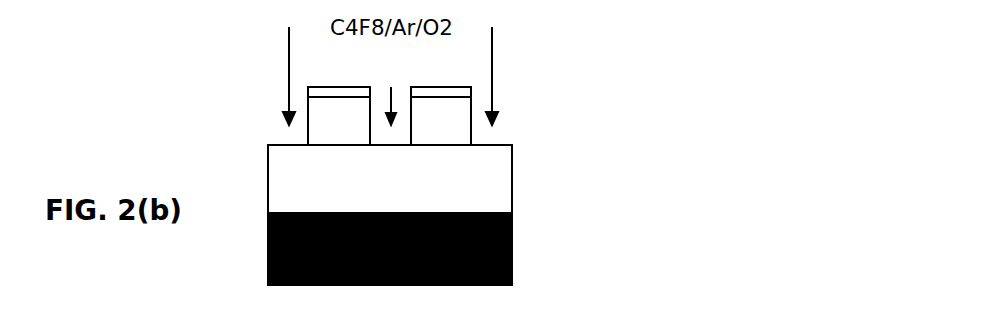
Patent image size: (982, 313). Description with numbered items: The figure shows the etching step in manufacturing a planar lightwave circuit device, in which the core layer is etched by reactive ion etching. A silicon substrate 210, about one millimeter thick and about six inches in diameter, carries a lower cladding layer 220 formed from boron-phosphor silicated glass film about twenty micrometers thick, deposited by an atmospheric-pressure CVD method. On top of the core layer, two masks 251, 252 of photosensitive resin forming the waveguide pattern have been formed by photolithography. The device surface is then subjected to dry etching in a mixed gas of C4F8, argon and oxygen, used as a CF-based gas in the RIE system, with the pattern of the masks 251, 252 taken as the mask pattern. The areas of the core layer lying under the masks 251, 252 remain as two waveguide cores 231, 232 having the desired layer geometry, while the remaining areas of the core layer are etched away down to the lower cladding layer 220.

The silicon substrate 210 is at (510, 247).
The lower cladding layer 220 is at (500, 185).
The waveguide core 231 is at (337, 144).
The waveguide core 232 is at (452, 138).
The mask 251 is at (328, 91).
The mask 252 is at (438, 91).